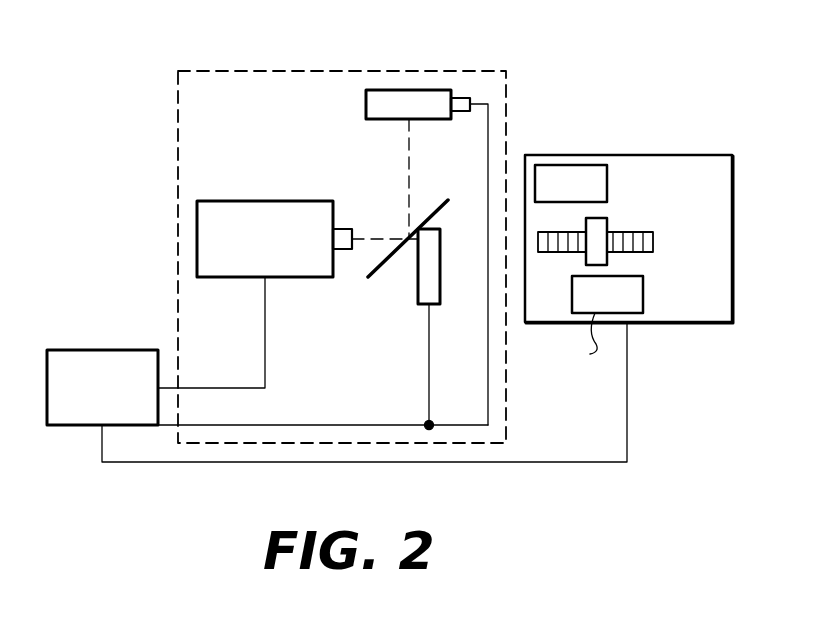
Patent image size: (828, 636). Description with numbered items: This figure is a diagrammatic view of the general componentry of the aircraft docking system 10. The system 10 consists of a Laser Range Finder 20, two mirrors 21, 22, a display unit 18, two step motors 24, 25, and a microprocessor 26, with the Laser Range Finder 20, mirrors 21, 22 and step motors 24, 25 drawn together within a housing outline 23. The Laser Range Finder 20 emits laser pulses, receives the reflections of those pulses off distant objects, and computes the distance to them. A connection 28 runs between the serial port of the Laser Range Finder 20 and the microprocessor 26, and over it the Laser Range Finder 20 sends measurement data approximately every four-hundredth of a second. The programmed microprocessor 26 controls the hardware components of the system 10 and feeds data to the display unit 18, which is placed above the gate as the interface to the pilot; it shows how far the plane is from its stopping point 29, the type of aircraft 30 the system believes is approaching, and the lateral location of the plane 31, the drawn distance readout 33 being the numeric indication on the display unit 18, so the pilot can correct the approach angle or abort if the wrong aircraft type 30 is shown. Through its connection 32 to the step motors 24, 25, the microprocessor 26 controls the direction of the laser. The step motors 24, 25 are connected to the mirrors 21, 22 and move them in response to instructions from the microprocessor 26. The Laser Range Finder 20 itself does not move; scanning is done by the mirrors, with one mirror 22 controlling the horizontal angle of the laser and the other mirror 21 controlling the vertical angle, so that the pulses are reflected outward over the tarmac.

The system 10 is at (556, 480).
The display unit 18 is at (695, 155).
The Laser Range Finder 20 is at (197, 228).
The mirror 21 is at (385, 90).
The mirror 22 is at (434, 212).
The housing 23 is at (222, 86).
The step motor 24 is at (461, 98).
The step motor 25 is at (418, 282).
The microprocessor 26 is at (118, 350).
The connection 28 is at (265, 352).
The stopping point 29 is at (577, 338).
The type of aircraft 30 is at (553, 165).
The lateral location of the plane 31 is at (625, 232).
The connection 32 is at (367, 425).
The numeric display 33 is at (607, 294).